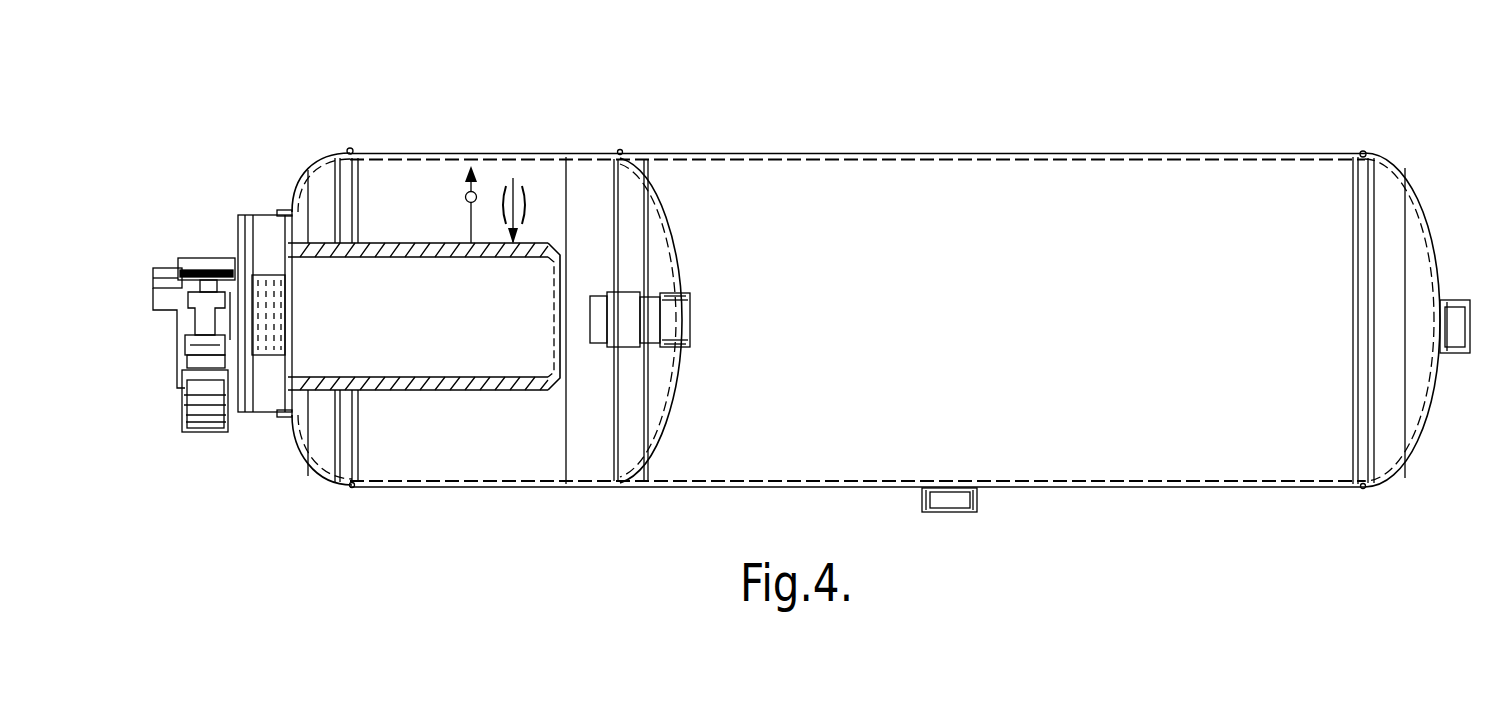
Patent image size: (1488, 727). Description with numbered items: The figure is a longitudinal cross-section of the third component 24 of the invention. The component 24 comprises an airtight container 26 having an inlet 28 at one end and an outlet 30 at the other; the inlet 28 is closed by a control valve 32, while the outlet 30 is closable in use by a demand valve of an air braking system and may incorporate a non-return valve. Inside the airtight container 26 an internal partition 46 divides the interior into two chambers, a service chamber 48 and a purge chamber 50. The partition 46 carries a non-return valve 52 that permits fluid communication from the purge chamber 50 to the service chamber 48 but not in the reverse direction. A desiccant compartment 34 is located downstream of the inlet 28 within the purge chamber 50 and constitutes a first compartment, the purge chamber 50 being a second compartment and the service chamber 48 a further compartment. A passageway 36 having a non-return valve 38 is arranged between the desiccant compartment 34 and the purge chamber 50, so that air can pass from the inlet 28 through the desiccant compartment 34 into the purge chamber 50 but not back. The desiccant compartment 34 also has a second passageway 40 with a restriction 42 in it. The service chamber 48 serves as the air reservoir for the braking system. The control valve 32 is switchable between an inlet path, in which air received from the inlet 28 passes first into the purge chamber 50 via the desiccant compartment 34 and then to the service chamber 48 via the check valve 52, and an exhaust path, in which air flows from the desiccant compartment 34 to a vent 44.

The third component 24 is at (962, 97).
The airtight container 26 is at (1136, 153).
The inlet 28 is at (160, 290).
The outlet 30 is at (1457, 337).
The control valve 32 is at (198, 262).
The desiccant compartment 34 is at (377, 245).
The passageway 36 is at (437, 245).
The non-return valve 38 is at (465, 197).
The second passageway 40 is at (512, 178).
The restriction 42 is at (528, 190).
The vent 44 is at (180, 413).
The internal partition 46 is at (680, 245).
The service chamber 48 is at (772, 440).
The purge chamber 50 is at (470, 450).
The non-return valve 52 is at (697, 318).